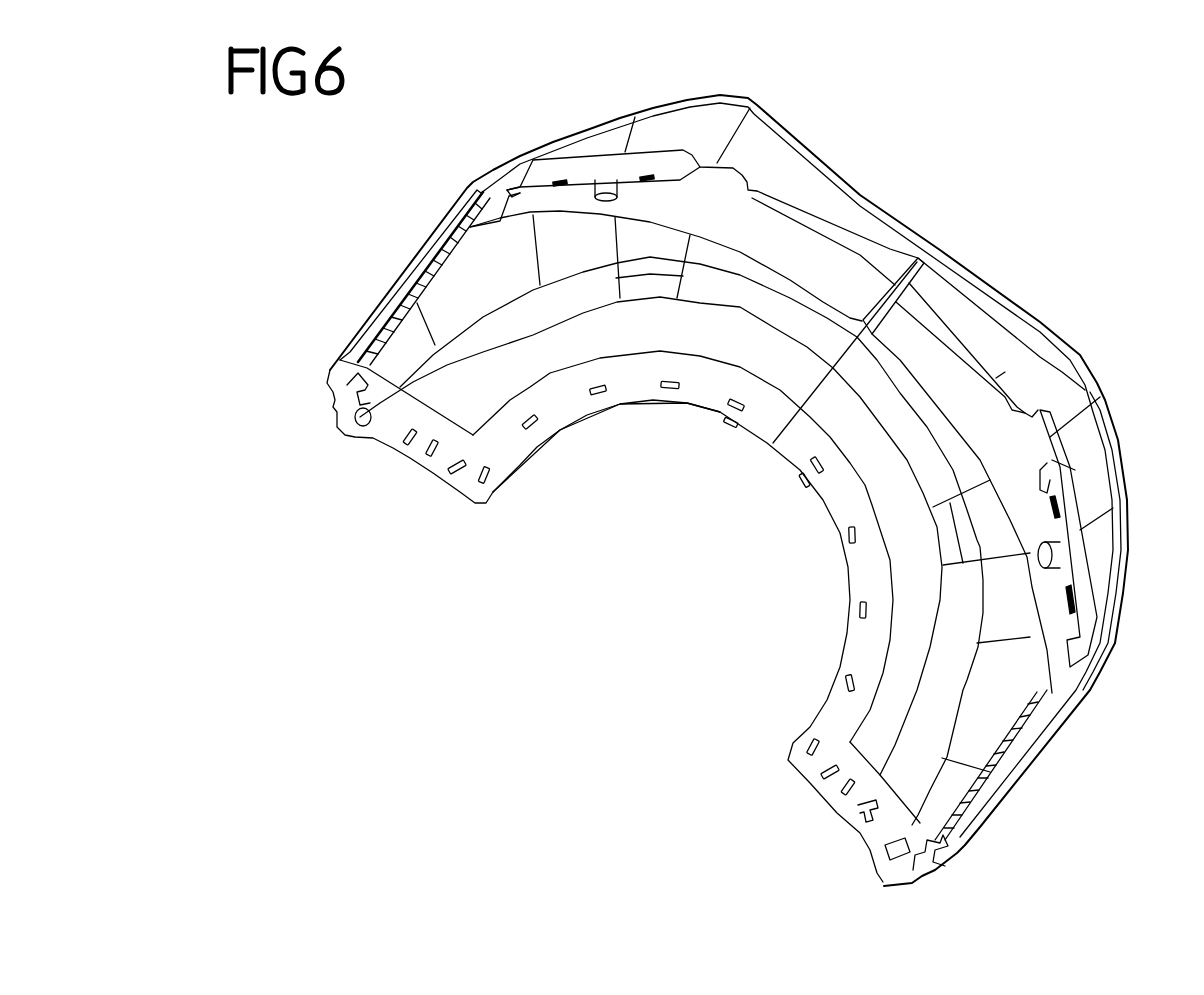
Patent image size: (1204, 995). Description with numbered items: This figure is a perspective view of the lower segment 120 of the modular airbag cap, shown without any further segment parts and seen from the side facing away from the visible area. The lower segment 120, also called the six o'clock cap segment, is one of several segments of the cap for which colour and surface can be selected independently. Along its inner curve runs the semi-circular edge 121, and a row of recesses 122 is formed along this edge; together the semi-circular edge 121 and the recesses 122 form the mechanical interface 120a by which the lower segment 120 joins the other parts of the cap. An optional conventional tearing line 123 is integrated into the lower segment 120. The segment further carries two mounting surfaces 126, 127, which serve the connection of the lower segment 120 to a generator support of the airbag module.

The lower cap segment 120 is at (1048, 350).
The mechanical interface 120a is at (596, 410).
The semi-circular edge 121 is at (692, 413).
The recesses 122 is at (843, 538).
The tearing line 123 is at (890, 288).
The mounting surface 126 is at (1054, 483).
The mounting surface 127 is at (587, 180).